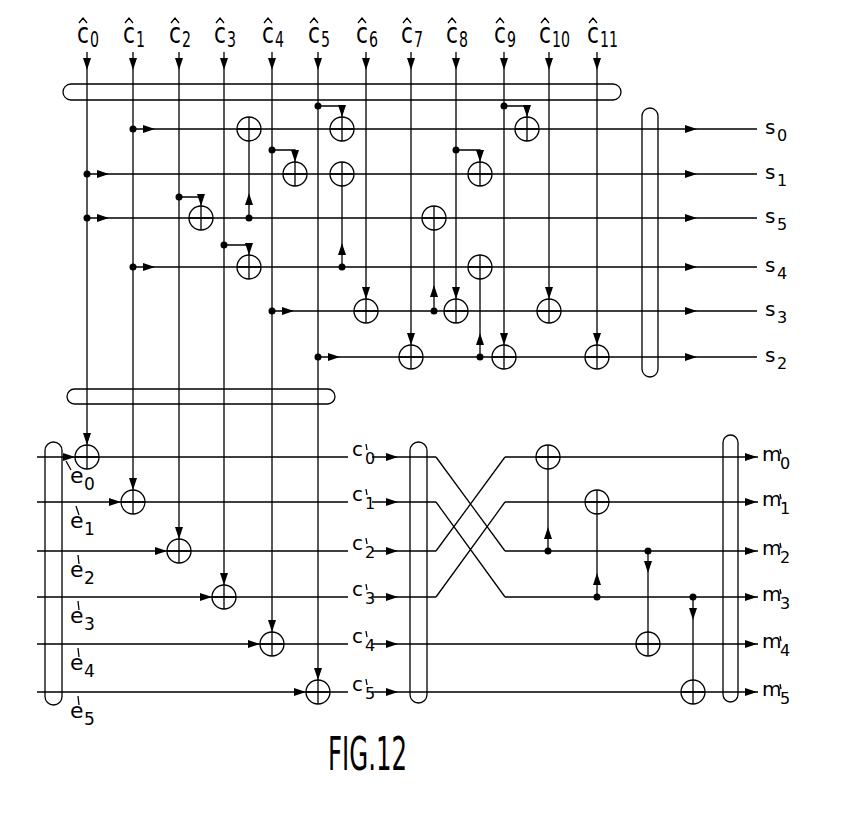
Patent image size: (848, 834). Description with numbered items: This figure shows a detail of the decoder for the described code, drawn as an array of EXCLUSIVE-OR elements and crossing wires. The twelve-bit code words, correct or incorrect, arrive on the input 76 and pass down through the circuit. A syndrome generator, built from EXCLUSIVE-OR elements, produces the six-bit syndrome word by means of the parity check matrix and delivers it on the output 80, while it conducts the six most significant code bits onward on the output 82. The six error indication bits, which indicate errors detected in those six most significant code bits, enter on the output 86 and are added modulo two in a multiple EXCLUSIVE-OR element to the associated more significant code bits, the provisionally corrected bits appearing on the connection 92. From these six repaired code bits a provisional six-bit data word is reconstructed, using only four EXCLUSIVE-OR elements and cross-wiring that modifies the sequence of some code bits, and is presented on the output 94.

The input 76 is at (615, 85).
The output 80 is at (651, 110).
The output 82 is at (335, 393).
The output 86 is at (60, 439).
The connection 92 is at (418, 440).
The output 94 is at (721, 436).